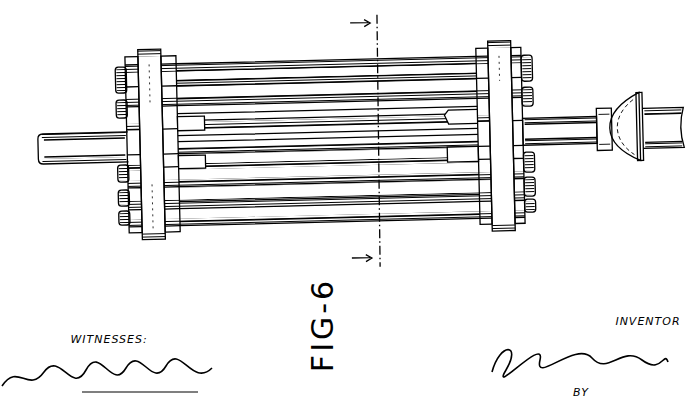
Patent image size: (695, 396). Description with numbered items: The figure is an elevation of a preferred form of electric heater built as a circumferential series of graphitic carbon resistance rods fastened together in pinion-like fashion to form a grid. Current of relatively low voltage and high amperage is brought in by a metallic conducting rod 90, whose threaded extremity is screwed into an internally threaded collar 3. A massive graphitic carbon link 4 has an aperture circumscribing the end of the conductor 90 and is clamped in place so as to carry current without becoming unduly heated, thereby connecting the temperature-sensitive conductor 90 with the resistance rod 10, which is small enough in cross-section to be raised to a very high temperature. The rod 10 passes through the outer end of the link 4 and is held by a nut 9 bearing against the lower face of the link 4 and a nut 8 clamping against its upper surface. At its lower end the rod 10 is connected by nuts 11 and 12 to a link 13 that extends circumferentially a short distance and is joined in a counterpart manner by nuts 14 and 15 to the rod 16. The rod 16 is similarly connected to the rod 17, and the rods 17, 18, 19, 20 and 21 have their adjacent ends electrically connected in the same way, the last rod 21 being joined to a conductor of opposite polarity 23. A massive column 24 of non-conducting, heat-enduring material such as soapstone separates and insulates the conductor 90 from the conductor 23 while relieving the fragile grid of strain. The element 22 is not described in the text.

The internally threaded collar 3 is at (191, 142).
The link 4 is at (158, 141).
The nut 8 is at (132, 131).
The nut 9 is at (172, 141).
The resistance rod 10 is at (327, 130).
The nut 11 is at (461, 135).
The nut 12 is at (520, 140).
The link 13 is at (507, 118).
The nut 14 is at (519, 78).
The nut 15 is at (485, 79).
The resistance rod 16 is at (212, 77).
The resistance rod 17 is at (189, 66).
The resistance rod 18 is at (125, 110).
The resistance rod 19 is at (125, 175).
The resistance rod 20 is at (234, 212).
The resistance rod 21 is at (274, 199).
The head ring 22 is at (506, 139).
The conductor of opposite polarity 23 is at (584, 133).
The column 24 is at (346, 150).
The metallic conducting rod 90 is at (40, 140).